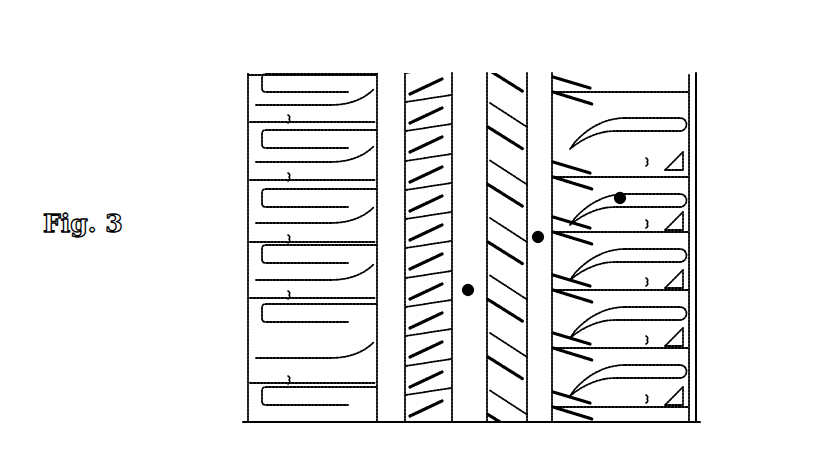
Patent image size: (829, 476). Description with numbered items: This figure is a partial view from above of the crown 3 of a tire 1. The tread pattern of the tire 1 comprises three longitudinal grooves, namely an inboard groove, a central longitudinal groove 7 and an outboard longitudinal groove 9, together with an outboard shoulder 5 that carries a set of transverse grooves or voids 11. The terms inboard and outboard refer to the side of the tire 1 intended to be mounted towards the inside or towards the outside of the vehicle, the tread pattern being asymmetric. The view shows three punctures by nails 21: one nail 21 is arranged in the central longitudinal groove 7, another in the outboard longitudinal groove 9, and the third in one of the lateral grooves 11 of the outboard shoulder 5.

The tire 1 is at (223, 80).
The crown 3 is at (325, 158).
The outboard shoulder 5 is at (635, 113).
The central longitudinal groove 7 is at (467, 160).
The outboard longitudinal groove 9 is at (540, 143).
The transverse grooves or voids 11 is at (655, 312).
The nails 21 is at (532, 237).